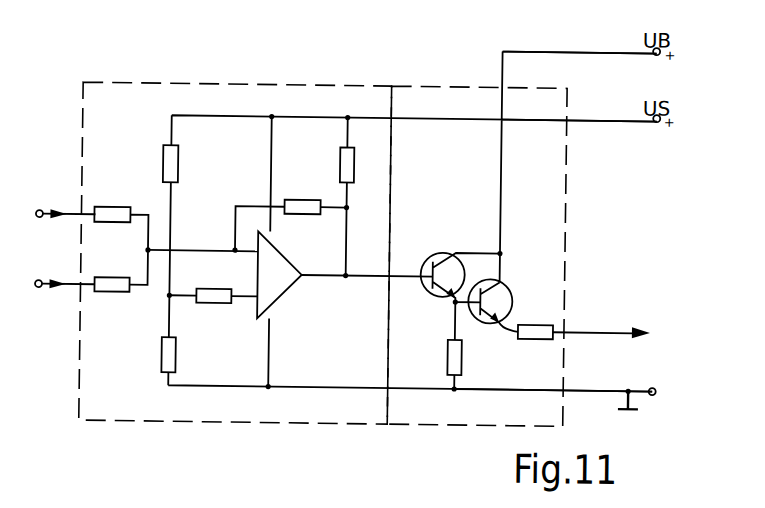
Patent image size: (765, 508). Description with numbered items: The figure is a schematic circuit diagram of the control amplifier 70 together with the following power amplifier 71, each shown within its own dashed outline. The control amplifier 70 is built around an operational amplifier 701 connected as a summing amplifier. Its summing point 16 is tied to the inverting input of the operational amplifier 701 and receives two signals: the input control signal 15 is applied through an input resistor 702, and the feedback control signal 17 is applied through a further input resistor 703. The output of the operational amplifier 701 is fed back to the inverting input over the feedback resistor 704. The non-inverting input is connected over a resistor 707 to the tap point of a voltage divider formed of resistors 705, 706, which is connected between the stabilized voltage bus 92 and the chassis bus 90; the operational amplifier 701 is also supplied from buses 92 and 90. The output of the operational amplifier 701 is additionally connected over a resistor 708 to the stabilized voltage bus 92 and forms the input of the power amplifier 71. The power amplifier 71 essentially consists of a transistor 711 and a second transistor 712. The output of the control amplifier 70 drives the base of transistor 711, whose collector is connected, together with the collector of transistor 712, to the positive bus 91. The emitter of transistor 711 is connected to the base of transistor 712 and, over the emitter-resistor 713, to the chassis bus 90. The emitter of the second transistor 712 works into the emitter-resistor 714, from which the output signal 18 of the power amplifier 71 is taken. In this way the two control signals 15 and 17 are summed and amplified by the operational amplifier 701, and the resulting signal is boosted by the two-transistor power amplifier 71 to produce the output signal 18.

The control amplifier 70 is at (171, 86).
The power amplifier 71 is at (424, 86).
The input control signal 15 is at (52, 216).
The feedback control signal 17 is at (52, 290).
The summing point 16 is at (148, 253).
The output signal 18 is at (641, 337).
The chassis bus 90 is at (605, 392).
The positive bus 91 is at (554, 50).
The stabilized voltage bus 92 is at (603, 119).
The operational amplifier 701 is at (281, 289).
The input resistor 702 is at (114, 210).
The input resistor 703 is at (114, 296).
The feedback resistor 704 is at (303, 201).
The voltage divider resistor 705 is at (177, 169).
The voltage divider resistor 706 is at (177, 360).
The resistor 707 is at (215, 306).
The resistor 708 is at (340, 160).
The transistor 711 is at (429, 259).
The second transistor 712 is at (512, 303).
The emitter-resistor 713 is at (449, 355).
The emitter-resistor 714 is at (528, 338).